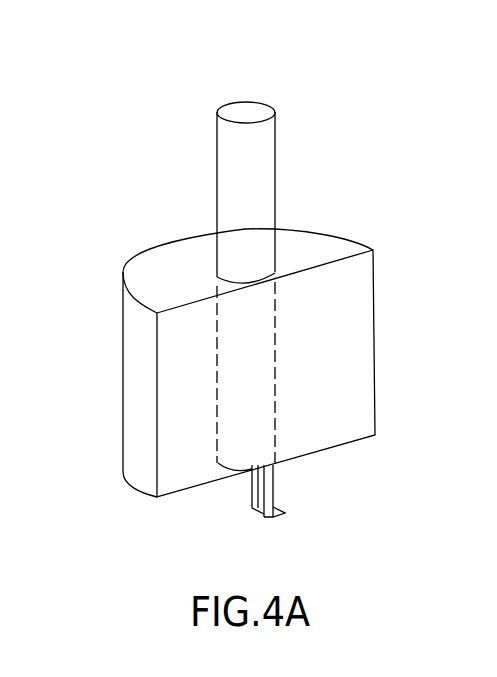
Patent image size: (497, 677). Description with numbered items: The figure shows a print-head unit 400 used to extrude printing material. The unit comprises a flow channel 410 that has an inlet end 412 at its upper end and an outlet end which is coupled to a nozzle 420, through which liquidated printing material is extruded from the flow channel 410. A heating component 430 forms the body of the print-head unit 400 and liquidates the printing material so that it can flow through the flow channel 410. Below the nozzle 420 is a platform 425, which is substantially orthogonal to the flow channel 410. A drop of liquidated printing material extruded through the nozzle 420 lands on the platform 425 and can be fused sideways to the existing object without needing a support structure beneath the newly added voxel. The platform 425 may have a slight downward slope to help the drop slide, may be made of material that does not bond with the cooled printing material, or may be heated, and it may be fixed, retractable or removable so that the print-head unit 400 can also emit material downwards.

The print-head unit 400 is at (100, 72).
The flow channel 410 is at (268, 137).
The inlet end 412 is at (247, 100).
The nozzle 420 is at (274, 484).
The platform 425 is at (258, 511).
The heating component 430 is at (368, 412).